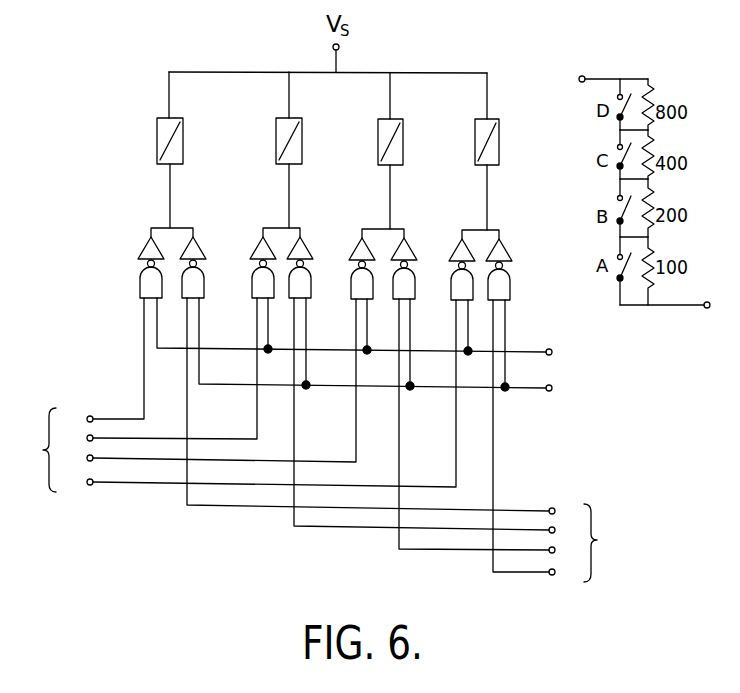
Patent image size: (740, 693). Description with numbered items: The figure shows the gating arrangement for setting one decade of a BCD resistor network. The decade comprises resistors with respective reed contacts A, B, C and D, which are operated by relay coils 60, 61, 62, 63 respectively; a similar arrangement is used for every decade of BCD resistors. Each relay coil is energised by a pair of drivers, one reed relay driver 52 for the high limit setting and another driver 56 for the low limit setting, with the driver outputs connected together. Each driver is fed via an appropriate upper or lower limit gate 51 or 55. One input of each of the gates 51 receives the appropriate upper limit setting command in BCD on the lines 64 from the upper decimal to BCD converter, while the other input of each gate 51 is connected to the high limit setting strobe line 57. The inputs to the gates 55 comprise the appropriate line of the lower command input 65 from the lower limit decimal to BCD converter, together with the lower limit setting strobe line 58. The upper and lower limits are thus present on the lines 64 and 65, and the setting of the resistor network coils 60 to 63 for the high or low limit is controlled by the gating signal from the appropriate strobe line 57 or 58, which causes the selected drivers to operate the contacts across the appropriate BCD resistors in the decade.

The gate 51 is at (457, 283).
The reed relay driver 52 is at (460, 247).
The gate 55 is at (503, 288).
The driver 56 is at (501, 250).
The strobe line 57 is at (552, 350).
The strobe line 58 is at (552, 388).
The coil 60 is at (496, 135).
The coil 61 is at (397, 133).
The coil 62 is at (296, 132).
The coil 63 is at (178, 132).
The lines 64 is at (66, 445).
The lower command input 65 is at (575, 537).